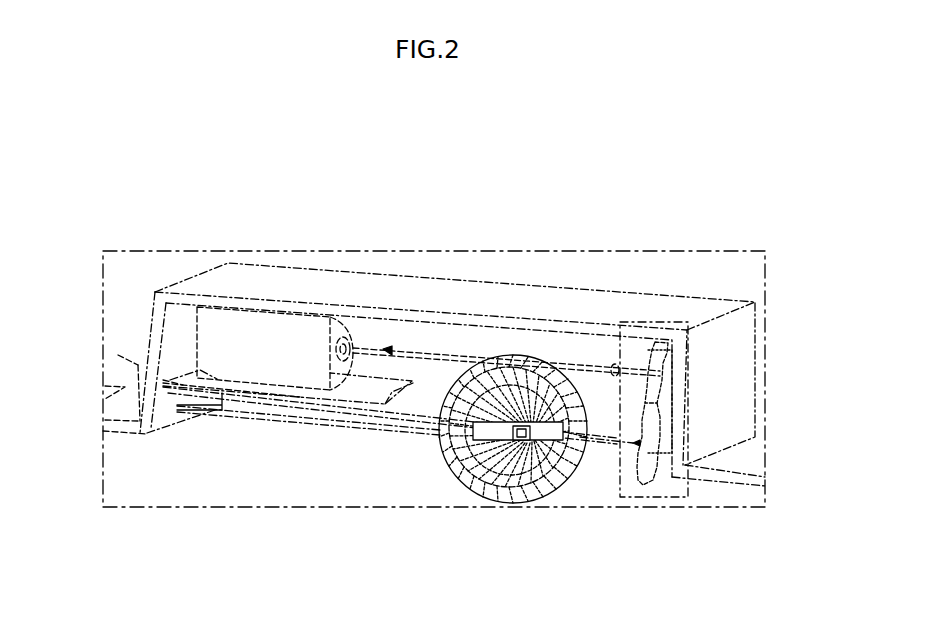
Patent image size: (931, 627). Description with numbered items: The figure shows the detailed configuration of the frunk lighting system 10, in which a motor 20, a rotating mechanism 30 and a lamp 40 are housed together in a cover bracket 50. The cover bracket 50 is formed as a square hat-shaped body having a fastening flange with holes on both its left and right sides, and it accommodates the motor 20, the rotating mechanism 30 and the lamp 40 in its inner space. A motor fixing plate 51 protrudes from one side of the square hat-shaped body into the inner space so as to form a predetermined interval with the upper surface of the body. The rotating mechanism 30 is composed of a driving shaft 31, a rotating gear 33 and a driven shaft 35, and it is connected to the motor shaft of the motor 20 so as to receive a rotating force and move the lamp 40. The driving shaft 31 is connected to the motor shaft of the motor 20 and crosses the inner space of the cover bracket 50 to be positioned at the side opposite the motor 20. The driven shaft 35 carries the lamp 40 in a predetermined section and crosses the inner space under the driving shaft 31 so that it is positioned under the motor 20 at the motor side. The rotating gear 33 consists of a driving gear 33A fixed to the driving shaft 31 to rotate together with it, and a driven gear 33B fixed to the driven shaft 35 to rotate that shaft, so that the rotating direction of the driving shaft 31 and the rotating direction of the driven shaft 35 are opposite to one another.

The frunk lighting system 10 is at (243, 183).
The motor 20 is at (230, 325).
The rotating mechanism 30 is at (568, 179).
The driving shaft 31 is at (388, 427).
The rotating gear 33 is at (693, 377).
The driving gear 33A is at (658, 364).
The driven gear 33B is at (663, 490).
The driven shaft 35 is at (450, 353).
The lamp 40 is at (542, 502).
The cover bracket 50 is at (143, 363).
The motor fixing plate 51 is at (170, 378).